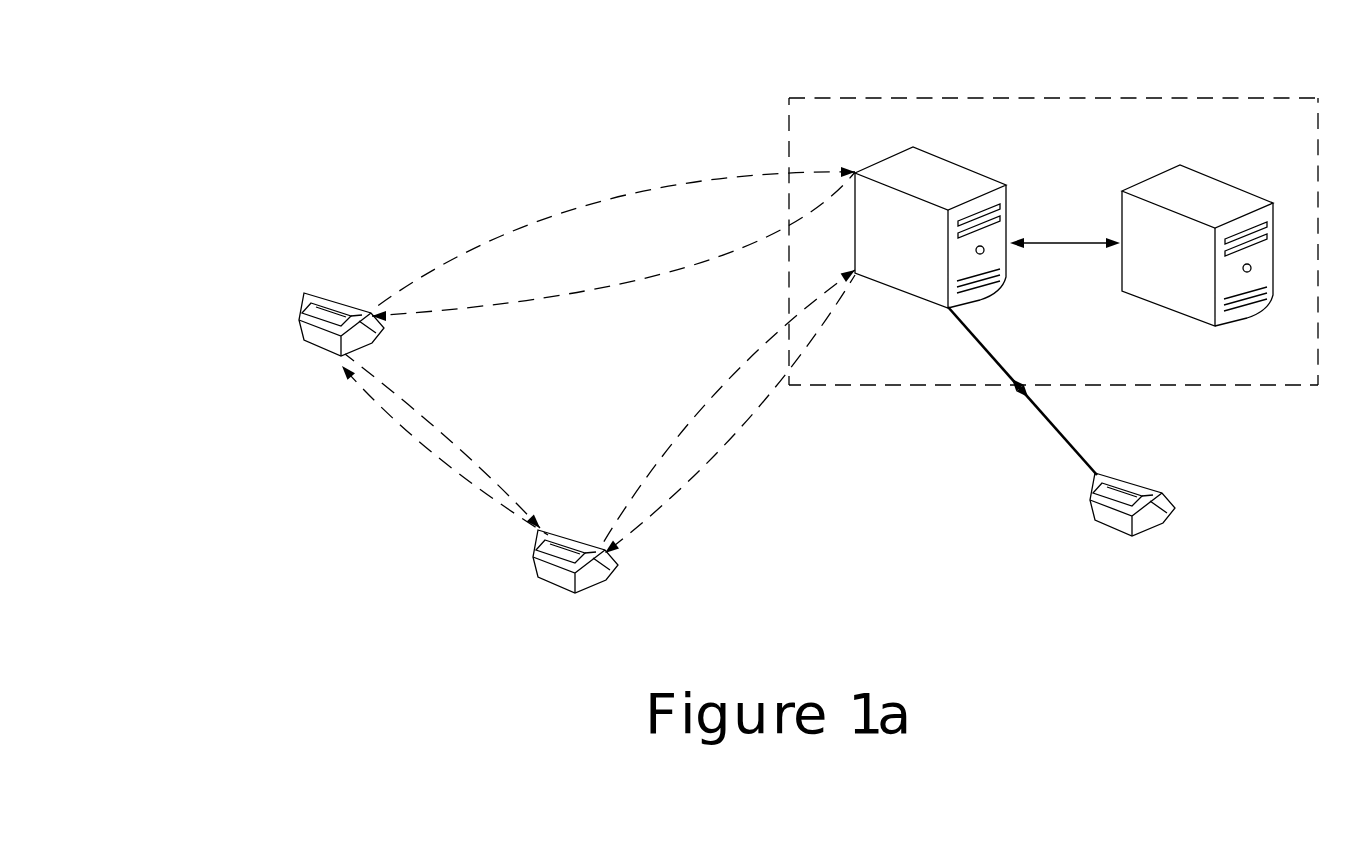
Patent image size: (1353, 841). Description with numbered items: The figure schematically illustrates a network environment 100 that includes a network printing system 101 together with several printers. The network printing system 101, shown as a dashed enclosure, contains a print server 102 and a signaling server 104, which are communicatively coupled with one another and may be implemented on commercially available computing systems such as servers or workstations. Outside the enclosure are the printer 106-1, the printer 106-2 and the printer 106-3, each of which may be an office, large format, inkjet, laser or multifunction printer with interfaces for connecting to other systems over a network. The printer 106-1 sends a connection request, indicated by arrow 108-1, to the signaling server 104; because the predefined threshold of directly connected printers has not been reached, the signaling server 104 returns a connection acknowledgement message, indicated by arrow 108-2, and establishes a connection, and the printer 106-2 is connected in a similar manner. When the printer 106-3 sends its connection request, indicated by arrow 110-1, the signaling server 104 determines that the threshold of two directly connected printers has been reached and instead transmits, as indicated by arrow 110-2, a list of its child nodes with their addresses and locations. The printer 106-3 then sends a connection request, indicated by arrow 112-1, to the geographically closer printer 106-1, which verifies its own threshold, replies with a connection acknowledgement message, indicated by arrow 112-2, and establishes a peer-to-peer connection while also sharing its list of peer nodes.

The network environment 100 is at (914, 55).
The network printing system 101 is at (1213, 98).
The print server 102 is at (1180, 167).
The signaling server 104 is at (1007, 184).
The printer 106-1 is at (618, 560).
The printer 106-2 is at (1170, 517).
The printer 106-3 is at (304, 293).
The connection request arrow 108-1 is at (683, 428).
The connection acknowledgement message arrow 108-2 is at (713, 455).
The connection request arrow 110-1 is at (538, 214).
The list of child nodes arrow 110-2 is at (567, 294).
The connection request arrow 112-1 is at (452, 436).
The connection acknowledgement message arrow 112-2 is at (423, 446).